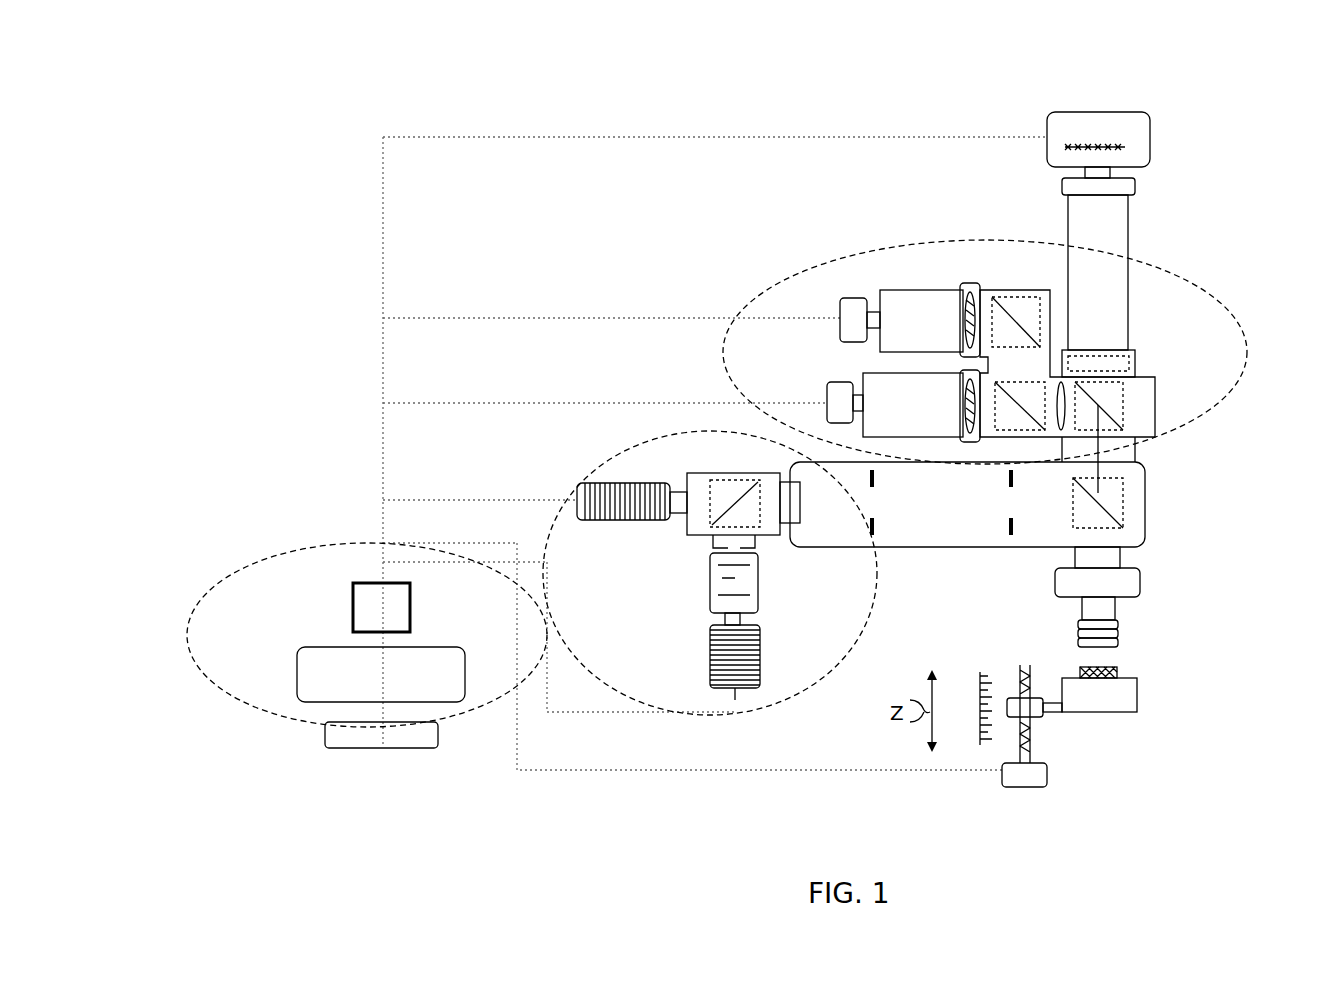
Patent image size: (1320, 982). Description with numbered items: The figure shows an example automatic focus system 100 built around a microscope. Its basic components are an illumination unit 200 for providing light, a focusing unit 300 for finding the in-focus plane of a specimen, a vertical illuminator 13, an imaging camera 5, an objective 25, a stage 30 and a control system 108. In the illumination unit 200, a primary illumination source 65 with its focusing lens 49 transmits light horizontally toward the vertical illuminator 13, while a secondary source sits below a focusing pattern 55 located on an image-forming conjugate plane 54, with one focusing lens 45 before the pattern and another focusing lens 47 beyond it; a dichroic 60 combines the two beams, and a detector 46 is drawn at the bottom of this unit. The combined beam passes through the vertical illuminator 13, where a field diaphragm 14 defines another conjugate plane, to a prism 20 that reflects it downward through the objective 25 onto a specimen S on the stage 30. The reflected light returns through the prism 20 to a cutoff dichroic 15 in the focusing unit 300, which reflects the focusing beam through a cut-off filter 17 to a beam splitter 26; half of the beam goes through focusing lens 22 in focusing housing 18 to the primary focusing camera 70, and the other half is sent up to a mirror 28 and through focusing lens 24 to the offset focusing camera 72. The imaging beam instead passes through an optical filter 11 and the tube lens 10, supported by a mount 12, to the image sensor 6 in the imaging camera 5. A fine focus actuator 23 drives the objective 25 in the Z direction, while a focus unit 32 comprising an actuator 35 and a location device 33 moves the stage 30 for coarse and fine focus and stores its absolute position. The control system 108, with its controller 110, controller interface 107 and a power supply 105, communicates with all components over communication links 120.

The automatic focus system 100 is at (488, 86).
The communication 120 is at (383, 335).
The imaging camera 5 is at (1067, 135).
The image sensor 6 is at (1160, 128).
The light source mount 12 is at (1068, 205).
The imaging camera lens tube 10 is at (1130, 331).
The optical filter 11 is at (1136, 361).
The focusing lens 24 is at (972, 322).
The mirror 28 is at (1022, 318).
The focusing lens 22 is at (968, 420).
The beam splitter 26 is at (1020, 422).
The cut-off filter 17 is at (1062, 426).
The cutoff dichroic 15 is at (1120, 401).
The focusing housing 18 is at (905, 295).
The offset focusing camera 72 is at (850, 327).
The primary focusing camera 70 is at (840, 413).
The focusing unit 300 is at (1230, 288).
The prism 20 is at (1108, 498).
The vertical illuminator 13 is at (893, 523).
The field diaphragm (F-stop) 14 is at (1015, 510).
The fine focus actuator 23 is at (1128, 590).
The objective 25 is at (1118, 641).
The specimen S is at (1120, 672).
The stage 30 is at (1077, 705).
The location device 33 is at (980, 698).
The focus unit 32 is at (1046, 758).
The actuator 35 is at (1020, 773).
The illumination unit 200 is at (612, 436).
The primary illumination source 65 is at (637, 492).
The focusing lens 49 is at (680, 494).
The dichroic 60 is at (700, 532).
The focusing pattern 55 is at (735, 585).
The focusing lens 47 is at (735, 558).
The image-forming conjugate plane 54 is at (725, 595).
The focusing lens 45 is at (742, 617).
The detector 46 is at (752, 660).
The control system 108 is at (268, 540).
The controller interface 107 is at (353, 612).
The controller 110 is at (352, 663).
The power supply 105 is at (345, 745).